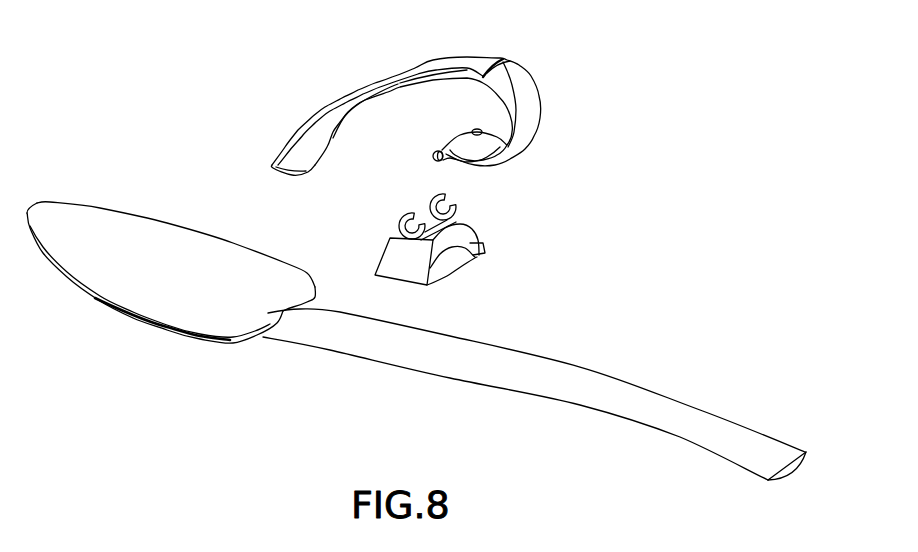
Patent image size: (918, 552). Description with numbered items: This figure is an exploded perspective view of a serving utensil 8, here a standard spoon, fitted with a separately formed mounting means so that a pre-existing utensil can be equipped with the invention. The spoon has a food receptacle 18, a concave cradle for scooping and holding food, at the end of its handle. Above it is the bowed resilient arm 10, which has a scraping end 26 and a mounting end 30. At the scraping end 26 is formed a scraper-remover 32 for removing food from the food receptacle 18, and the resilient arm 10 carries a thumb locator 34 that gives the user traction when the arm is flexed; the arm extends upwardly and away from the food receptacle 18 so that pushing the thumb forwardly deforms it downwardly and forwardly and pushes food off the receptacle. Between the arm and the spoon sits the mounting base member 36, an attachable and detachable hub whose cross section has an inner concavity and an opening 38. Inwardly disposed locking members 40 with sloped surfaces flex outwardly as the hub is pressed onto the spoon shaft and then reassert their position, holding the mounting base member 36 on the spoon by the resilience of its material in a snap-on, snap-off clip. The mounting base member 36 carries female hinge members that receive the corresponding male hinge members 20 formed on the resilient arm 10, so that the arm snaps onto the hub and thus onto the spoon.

The serving utensil 8 is at (671, 346).
The resilient arm 10 is at (548, 76).
The food receptacle 18 is at (140, 237).
The male hinge member 20 is at (432, 160).
The scraping end 26 is at (342, 124).
The mounting end 30 is at (462, 137).
The scraper-remover 32 is at (316, 137).
The thumb locator 34 is at (513, 67).
The mounting base member 36 is at (410, 268).
The opening 38 is at (448, 267).
The locking members 40 is at (480, 250).